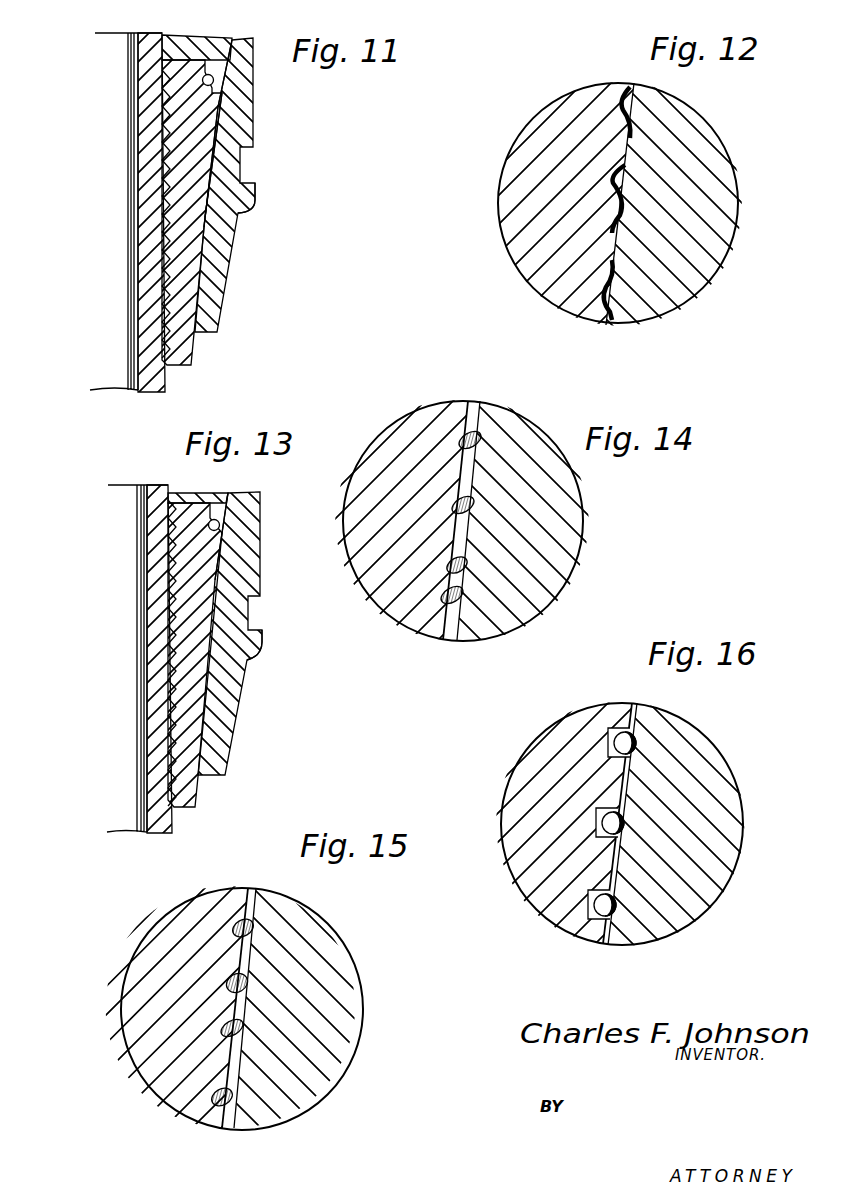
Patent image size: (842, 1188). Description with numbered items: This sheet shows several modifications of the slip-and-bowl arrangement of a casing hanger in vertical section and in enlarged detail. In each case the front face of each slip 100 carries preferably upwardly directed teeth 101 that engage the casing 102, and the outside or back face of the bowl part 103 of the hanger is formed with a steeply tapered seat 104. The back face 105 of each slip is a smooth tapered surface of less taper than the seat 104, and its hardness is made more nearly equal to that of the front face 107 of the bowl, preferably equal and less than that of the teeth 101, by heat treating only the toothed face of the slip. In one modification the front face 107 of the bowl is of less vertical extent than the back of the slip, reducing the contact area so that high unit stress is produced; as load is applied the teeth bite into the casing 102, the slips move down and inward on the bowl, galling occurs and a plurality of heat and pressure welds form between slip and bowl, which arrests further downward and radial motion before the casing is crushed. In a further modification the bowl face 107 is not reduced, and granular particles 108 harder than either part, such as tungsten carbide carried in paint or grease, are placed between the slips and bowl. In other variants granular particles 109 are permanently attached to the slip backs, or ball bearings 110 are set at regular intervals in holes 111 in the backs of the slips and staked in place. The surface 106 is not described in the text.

In FIG. 11, the slip 100 is at (183, 225).
In FIG. 12, the slip 100 is at (542, 130).
In FIG. 13, the slip 100 is at (187, 567).
In FIG. 14, the slip 100 is at (400, 422).
In FIG. 15, the slip 100 is at (180, 923).
In FIG. 16, the slip 100 is at (540, 755).
In FIG. 11, the teeth 101 is at (162, 127).
In FIG. 13, the teeth 101 is at (168, 532).
In FIG. 11, the casing 102 is at (150, 168).
In FIG. 13, the casing 102 is at (150, 667).
In FIG. 11, the bowl part 103 is at (242, 135).
In FIG. 12, the bowl part 103 is at (698, 133).
In FIG. 13, the bowl part 103 is at (255, 557).
In FIG. 14, the bowl part 103 is at (522, 432).
In FIG. 15, the bowl part 103 is at (307, 940).
In FIG. 16, the bowl part 103 is at (710, 903).
In FIG. 11, the tapered seat 104 is at (236, 213).
In FIG. 13, the tapered seat 104 is at (247, 650).
In FIG. 11, the back face 105 is at (213, 113).
In FIG. 13, the back face 105 is at (216, 582).
In FIG. 11, the interface surface 106 is at (213, 165).
In FIG. 13, the front face 107 is at (230, 513).
In FIG. 14, the granular particles 108 is at (487, 632).
In FIG. 15, the granular particles 109 is at (215, 1103).
In FIG. 16, the ball bearings 110 is at (598, 917).
In FIG. 16, the holes 111 is at (595, 903).